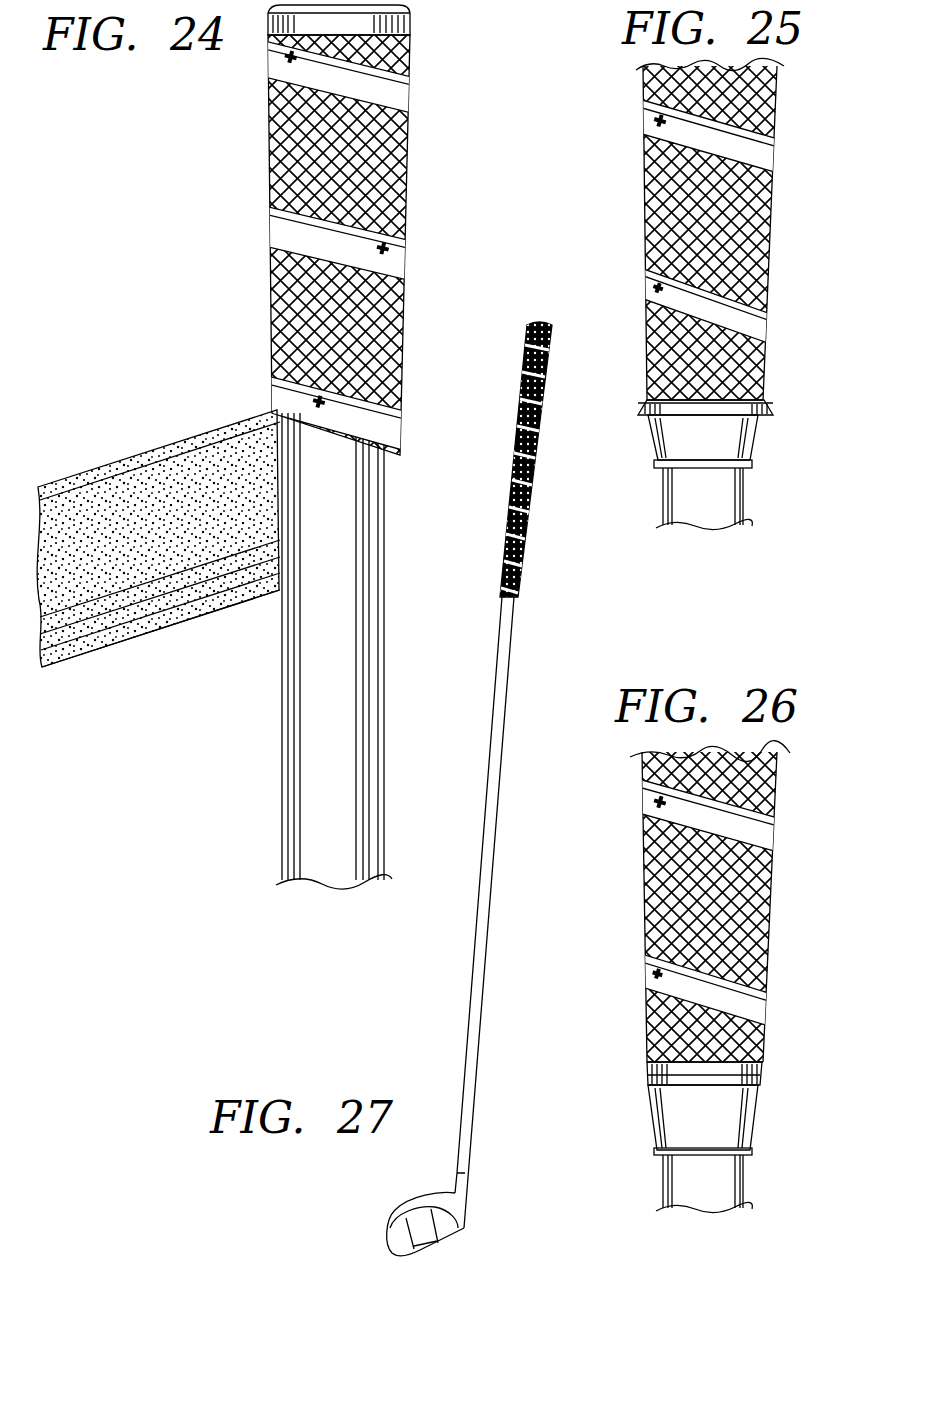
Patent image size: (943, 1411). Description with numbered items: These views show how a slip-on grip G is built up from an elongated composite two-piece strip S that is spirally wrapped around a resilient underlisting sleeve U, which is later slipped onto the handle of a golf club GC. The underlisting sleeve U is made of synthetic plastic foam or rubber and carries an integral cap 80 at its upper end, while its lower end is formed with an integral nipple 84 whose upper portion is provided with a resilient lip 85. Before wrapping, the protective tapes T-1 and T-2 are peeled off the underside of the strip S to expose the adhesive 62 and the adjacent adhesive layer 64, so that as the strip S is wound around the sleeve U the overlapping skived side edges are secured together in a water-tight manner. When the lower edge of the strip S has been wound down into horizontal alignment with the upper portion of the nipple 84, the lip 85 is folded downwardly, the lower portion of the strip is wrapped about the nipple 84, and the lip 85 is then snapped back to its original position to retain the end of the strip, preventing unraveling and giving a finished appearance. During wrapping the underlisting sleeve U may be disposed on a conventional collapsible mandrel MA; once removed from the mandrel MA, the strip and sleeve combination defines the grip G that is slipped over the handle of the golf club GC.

In FIG. 24, the grip G is at (268, 166).
In FIG. 25, the grip G is at (770, 211).
In FIG. 26, the grip G is at (773, 921).
In FIG. 27, the grip G is at (532, 477).
In FIG. 24, the cap 80 is at (411, 15).
In FIG. 24, the underlisting sleeve U is at (288, 752).
In FIG. 24, the composite strip S is at (215, 426).
In FIG. 24, the protective tape T-1 is at (100, 487).
In FIG. 24, the adhesive 62 is at (153, 470).
In FIG. 24, the strip lower layer 64 is at (175, 607).
In FIG. 24, the protective tape T-2 is at (92, 630).
In FIG. 25, the resilient lip 85 is at (760, 412).
In FIG. 26, the resilient lip 85 is at (757, 1073).
In FIG. 25, the nipple 84 is at (752, 447).
In FIG. 26, the nipple 84 is at (748, 1121).
In FIG. 25, the mandrel MA is at (742, 505).
In FIG. 26, the mandrel MA is at (738, 1181).
In FIG. 27, the golf club GC is at (480, 921).